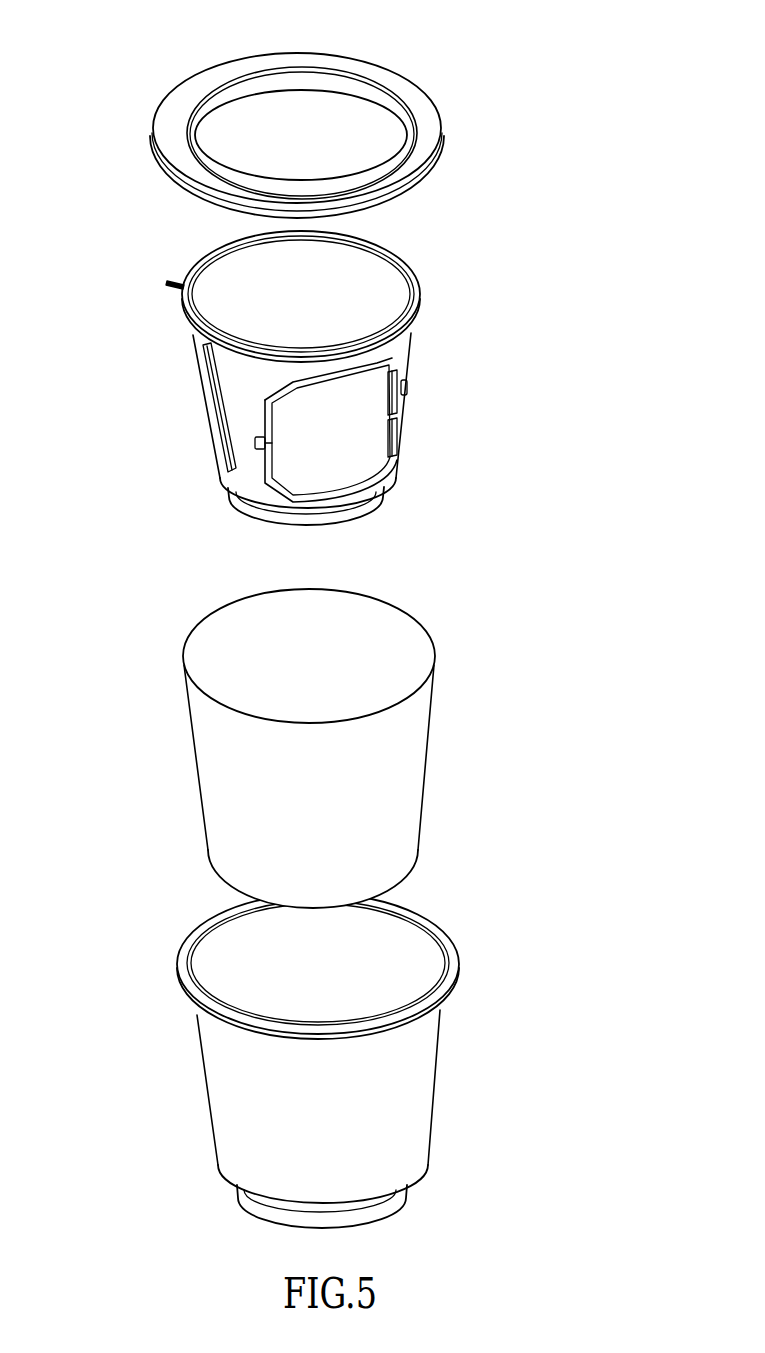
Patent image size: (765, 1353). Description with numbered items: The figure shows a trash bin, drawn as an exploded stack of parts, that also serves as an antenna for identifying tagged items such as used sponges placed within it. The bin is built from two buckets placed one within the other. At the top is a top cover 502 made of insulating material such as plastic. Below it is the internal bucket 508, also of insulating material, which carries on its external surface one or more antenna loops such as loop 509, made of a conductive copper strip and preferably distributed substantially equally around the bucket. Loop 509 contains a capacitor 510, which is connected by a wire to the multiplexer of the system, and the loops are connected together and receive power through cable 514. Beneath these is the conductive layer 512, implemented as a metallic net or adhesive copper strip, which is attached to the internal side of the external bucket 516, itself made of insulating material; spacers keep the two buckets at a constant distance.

The top cover 502 is at (373, 76).
The internal bucket 508 is at (394, 347).
The loop 509 is at (193, 334).
The capacitor 510 is at (254, 442).
The conductive layer 512 is at (403, 632).
The cable 514 is at (182, 282).
The external bucket 516 is at (406, 1099).